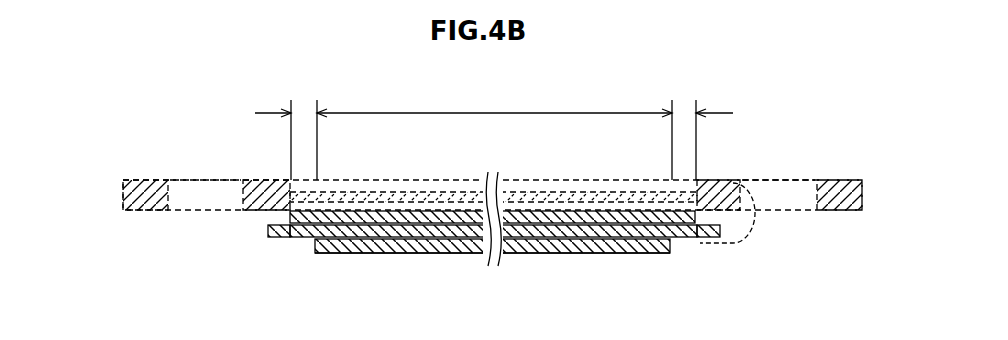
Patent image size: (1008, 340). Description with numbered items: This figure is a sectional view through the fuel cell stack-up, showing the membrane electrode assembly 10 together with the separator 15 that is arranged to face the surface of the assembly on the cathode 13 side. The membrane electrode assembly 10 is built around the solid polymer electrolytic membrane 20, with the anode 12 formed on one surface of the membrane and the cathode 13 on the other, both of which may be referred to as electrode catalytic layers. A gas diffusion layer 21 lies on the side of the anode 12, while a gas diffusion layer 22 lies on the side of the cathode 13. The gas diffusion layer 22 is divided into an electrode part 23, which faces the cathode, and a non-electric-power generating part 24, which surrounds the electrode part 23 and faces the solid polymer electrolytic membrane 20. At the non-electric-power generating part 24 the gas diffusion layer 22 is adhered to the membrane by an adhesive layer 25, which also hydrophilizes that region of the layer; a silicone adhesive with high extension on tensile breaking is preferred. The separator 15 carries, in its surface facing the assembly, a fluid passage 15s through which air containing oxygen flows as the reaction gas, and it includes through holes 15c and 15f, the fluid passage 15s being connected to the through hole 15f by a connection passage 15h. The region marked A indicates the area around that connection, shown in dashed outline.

The membrane electrode assembly 10 is at (357, 270).
The anode 12 is at (425, 249).
The cathode 13 is at (440, 222).
The separator 15 is at (537, 180).
The through hole 15c is at (198, 180).
The through hole 15f is at (797, 186).
The connection passage 15h is at (741, 246).
The fluid passage 15s is at (604, 198).
The solid polymer electrolytic membrane 20 is at (273, 238).
The gas diffusion layer 21 is at (617, 254).
The gas diffusion layer 22 is at (372, 217).
The electrode part 23 is at (494, 97).
The non-electric-power generating part 24 is at (494, 128).
The adhesive layer 25 is at (302, 238).
The region A is at (760, 196).